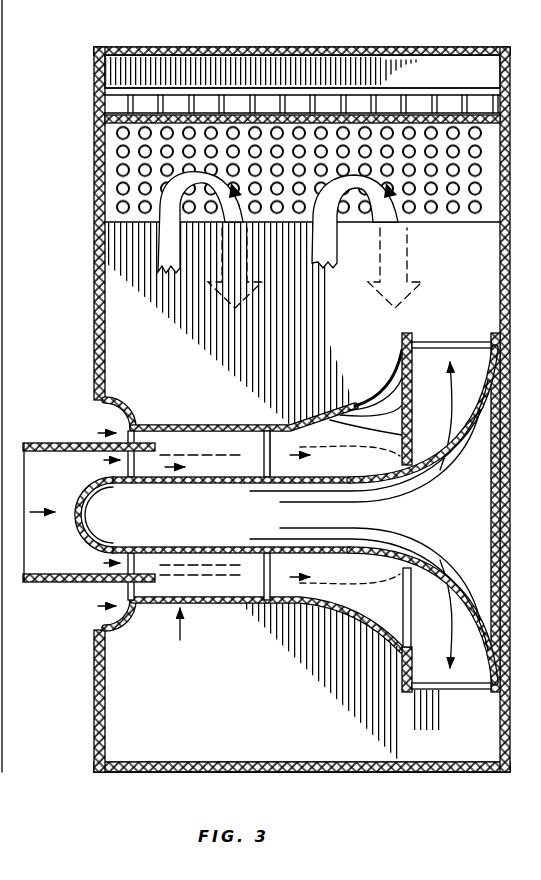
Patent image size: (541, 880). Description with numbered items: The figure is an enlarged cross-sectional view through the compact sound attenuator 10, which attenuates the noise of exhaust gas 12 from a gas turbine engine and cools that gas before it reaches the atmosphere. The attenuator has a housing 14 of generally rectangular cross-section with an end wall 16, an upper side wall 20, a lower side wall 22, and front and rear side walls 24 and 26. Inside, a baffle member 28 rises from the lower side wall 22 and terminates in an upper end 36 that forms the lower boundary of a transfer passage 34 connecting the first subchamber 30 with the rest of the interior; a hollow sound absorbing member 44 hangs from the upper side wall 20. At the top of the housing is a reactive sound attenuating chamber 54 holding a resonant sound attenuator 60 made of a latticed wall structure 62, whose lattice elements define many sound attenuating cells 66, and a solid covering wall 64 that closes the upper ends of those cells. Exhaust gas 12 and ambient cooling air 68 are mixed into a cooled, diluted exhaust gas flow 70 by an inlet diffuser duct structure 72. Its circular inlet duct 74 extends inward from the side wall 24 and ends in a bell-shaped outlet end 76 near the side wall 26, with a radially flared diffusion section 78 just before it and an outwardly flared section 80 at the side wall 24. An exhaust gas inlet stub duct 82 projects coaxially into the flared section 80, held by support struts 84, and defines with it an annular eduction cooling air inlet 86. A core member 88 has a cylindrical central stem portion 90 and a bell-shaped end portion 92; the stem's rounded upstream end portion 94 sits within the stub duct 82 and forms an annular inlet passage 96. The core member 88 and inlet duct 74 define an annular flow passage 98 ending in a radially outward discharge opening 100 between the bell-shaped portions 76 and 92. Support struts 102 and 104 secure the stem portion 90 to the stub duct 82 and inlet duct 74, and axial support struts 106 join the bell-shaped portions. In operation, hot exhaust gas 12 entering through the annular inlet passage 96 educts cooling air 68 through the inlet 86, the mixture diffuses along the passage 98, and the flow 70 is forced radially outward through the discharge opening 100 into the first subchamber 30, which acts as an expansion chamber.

The compact sound attenuator 10 is at (431, 776).
The exhaust gas 12 is at (45, 527).
The housing 14 is at (217, 780).
The end wall 16 is at (3, 292).
The upper side wall 20 is at (331, 48).
The lower side wall 22 is at (133, 773).
The front side wall 24 is at (104, 330).
The rear side wall 26 is at (510, 292).
The baffle member 28 is at (205, 334).
The first subchamber 30 is at (104, 720).
The transfer passage 34 is at (112, 185).
The upper end of baffle 36 is at (105, 222).
The hollow sound absorbing member 44 is at (110, 145).
The reactive sound attenuating chamber 54 is at (372, 70).
The resonant sound attenuator 60 is at (148, 72).
The latticed wall structure 62 is at (105, 103).
The covering wall 64 is at (105, 77).
The sound attenuating cells 66 is at (237, 100).
The ambient cooling air 68 is at (100, 428).
The cooled, diluted exhaust gas flow 70 is at (474, 660).
The inlet diffuser duct structure 72 is at (268, 404).
The inlet duct 74 is at (173, 630).
The bell-shaped outlet end 76 is at (402, 353).
The diffusion section 78 is at (290, 615).
The outwardly flared section 80 is at (135, 422).
The exhaust gas inlet stub duct 82 is at (93, 583).
The support struts 84 is at (172, 427).
The annular eduction cooling air inlet 86 is at (120, 402).
The core member 88 is at (215, 610).
The central stem portion 90 is at (215, 454).
The bell-shaped end portion 92 is at (494, 342).
The rounded upstream end portion 94 is at (96, 498).
The annular inlet passage 96 is at (108, 484).
The annular flow passage 98 is at (241, 604).
The discharge opening 100 is at (410, 694).
The support struts 102 is at (143, 553).
The support struts 104 is at (237, 600).
The support struts 106 is at (445, 342).